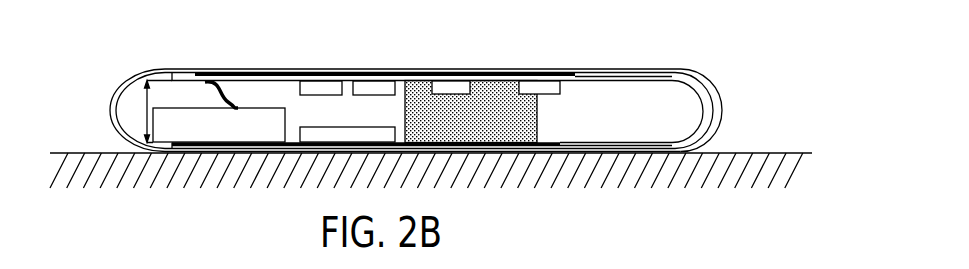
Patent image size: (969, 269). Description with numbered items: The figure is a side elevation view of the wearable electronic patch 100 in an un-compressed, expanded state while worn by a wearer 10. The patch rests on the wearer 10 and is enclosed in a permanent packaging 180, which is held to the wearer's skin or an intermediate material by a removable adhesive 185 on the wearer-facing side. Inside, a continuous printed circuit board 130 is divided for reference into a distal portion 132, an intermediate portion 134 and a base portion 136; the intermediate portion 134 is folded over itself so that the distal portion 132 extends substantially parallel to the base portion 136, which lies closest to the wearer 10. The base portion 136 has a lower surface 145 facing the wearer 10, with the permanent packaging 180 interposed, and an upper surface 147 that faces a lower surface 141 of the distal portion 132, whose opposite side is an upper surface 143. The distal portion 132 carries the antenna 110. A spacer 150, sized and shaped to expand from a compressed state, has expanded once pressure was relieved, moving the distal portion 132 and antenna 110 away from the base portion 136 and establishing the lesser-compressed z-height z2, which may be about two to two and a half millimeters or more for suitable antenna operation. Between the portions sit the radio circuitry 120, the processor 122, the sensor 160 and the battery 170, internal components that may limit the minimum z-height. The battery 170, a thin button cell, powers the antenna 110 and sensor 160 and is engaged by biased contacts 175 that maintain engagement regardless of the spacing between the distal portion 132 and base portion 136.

The wearer 10 is at (86, 153).
The wearable electronic patch 100 is at (426, 134).
The antenna 110 is at (248, 72).
The radio circuitry 120 is at (325, 80).
The processor 122 is at (468, 53).
The printed circuit board 130 is at (574, 69).
The distal portion 132 is at (637, 70).
The intermediate portion 134 is at (710, 108).
The base portion 136 is at (633, 142).
The lower surface 141 is at (597, 81).
The upper surface 143 is at (598, 69).
The lower surface 145 is at (614, 152).
The upper surface 147 is at (615, 142).
The spacer 150 is at (471, 112).
The sensor 160 is at (325, 127).
The battery 170 is at (238, 134).
The contacts 175 is at (207, 82).
The permanent packaging 180 is at (114, 95).
The removable adhesive 185 is at (273, 155).
The lesser-compressed z-height z2 is at (149, 112).